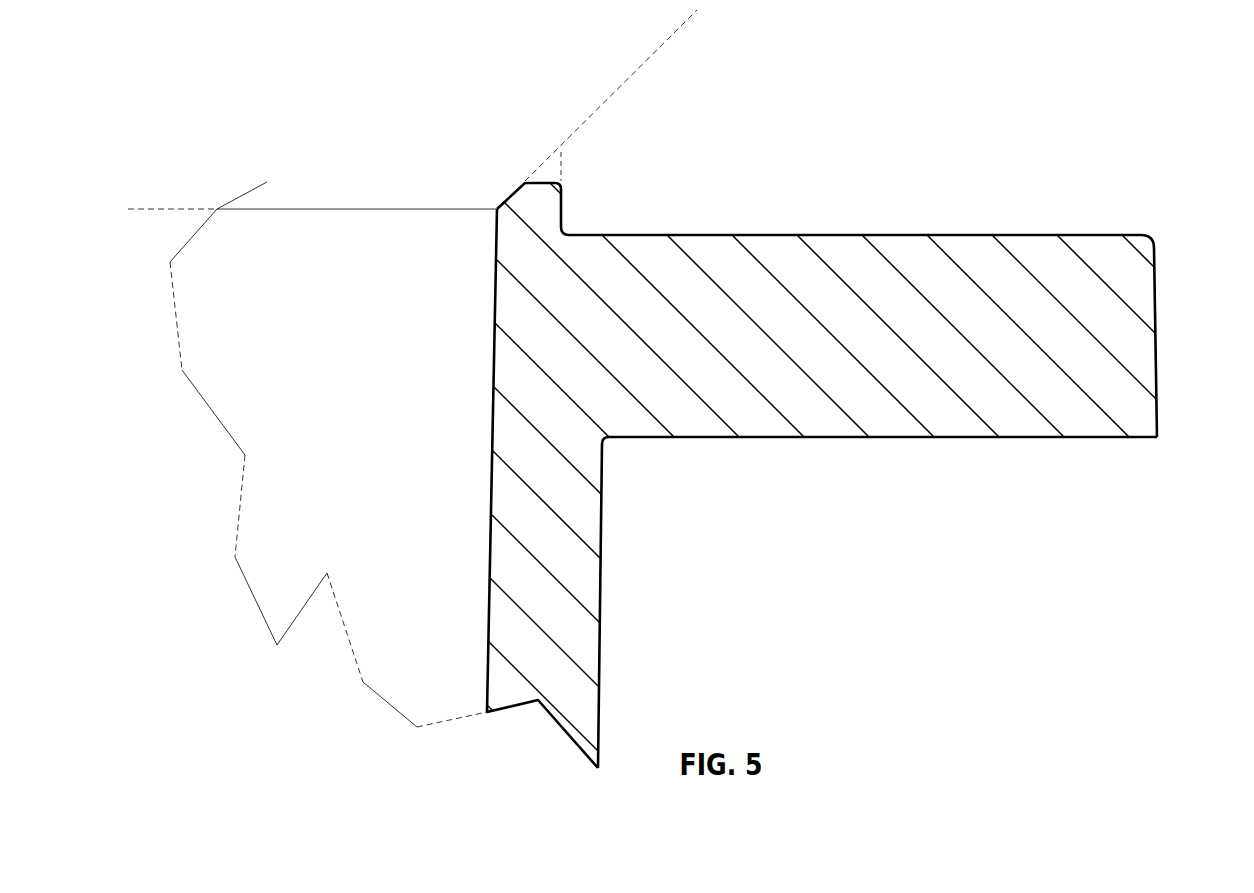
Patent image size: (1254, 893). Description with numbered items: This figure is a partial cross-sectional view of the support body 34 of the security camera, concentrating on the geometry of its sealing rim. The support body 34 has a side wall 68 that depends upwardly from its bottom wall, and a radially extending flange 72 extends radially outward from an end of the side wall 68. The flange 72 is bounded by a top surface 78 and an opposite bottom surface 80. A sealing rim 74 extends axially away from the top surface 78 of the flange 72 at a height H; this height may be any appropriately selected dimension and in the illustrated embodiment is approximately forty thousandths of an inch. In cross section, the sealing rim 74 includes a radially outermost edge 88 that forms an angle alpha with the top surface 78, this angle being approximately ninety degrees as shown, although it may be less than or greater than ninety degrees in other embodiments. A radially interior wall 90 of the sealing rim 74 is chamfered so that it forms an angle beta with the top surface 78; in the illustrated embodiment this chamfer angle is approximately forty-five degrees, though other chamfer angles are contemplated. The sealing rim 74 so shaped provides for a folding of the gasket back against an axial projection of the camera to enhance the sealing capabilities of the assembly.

The support body 34 is at (627, 445).
The side wall 68 is at (491, 500).
The flange 72 is at (1157, 300).
The sealing rim 74 is at (500, 168).
The top surface 78 is at (968, 233).
The bottom surface 80 is at (968, 437).
The radially outermost edge 88 is at (563, 210).
The radially interior wall 90 is at (297, 195).
The height H is at (150, 253).